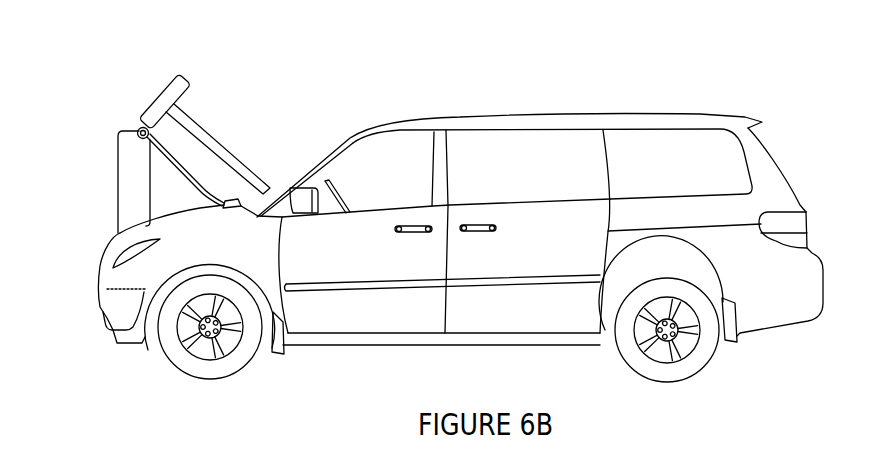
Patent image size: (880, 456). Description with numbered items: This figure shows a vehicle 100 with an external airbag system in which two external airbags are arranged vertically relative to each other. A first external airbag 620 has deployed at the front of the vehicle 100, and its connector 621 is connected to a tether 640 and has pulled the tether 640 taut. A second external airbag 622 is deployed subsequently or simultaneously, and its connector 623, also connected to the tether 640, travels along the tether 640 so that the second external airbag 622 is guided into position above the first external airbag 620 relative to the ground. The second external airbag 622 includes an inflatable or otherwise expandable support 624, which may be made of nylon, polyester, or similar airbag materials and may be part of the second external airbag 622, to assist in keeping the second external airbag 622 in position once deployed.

The vehicle 100 is at (108, 324).
The first external airbag 620 is at (118, 182).
The connector 621 is at (136, 129).
The second external airbag 622 is at (183, 73).
The connector 623 is at (133, 133).
The support 624 is at (192, 133).
The tether 640 is at (200, 193).